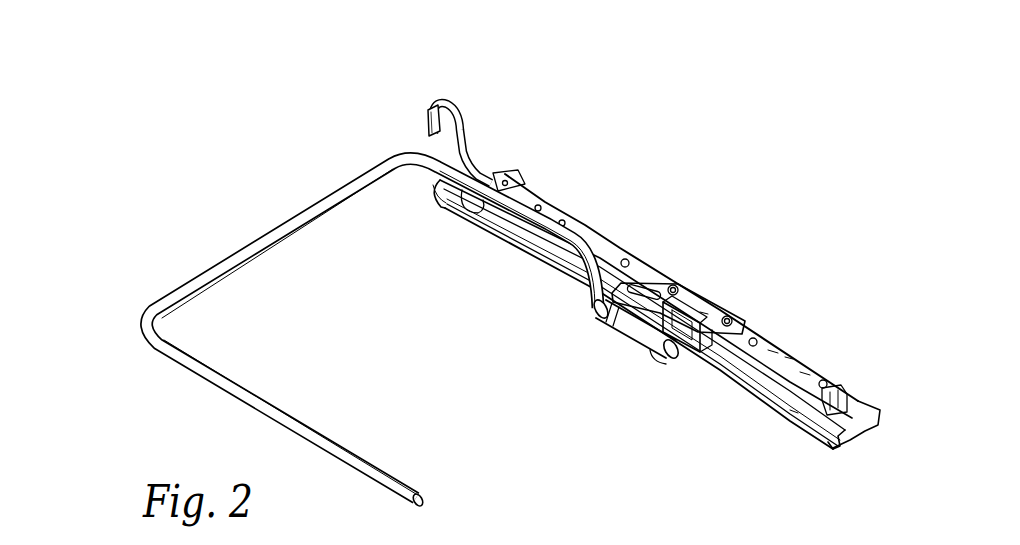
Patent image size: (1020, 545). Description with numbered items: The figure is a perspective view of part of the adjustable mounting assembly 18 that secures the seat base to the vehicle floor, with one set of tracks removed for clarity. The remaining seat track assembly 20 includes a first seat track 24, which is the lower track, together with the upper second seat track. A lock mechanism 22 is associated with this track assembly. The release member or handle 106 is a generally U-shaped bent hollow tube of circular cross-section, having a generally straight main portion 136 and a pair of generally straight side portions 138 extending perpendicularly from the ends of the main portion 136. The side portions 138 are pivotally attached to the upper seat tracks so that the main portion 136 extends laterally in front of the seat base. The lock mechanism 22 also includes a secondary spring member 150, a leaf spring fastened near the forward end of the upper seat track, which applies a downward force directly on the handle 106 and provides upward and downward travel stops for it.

The adjustable mounting assembly 18 is at (175, 143).
The seat track assembly 20 is at (783, 348).
The lock mechanism 22 is at (723, 297).
The first seat track 24 is at (770, 403).
The release member or handle 106 is at (185, 278).
The front or main portion 136 is at (241, 250).
The side portion 138 is at (253, 392).
The secondary spring member 150 is at (463, 118).